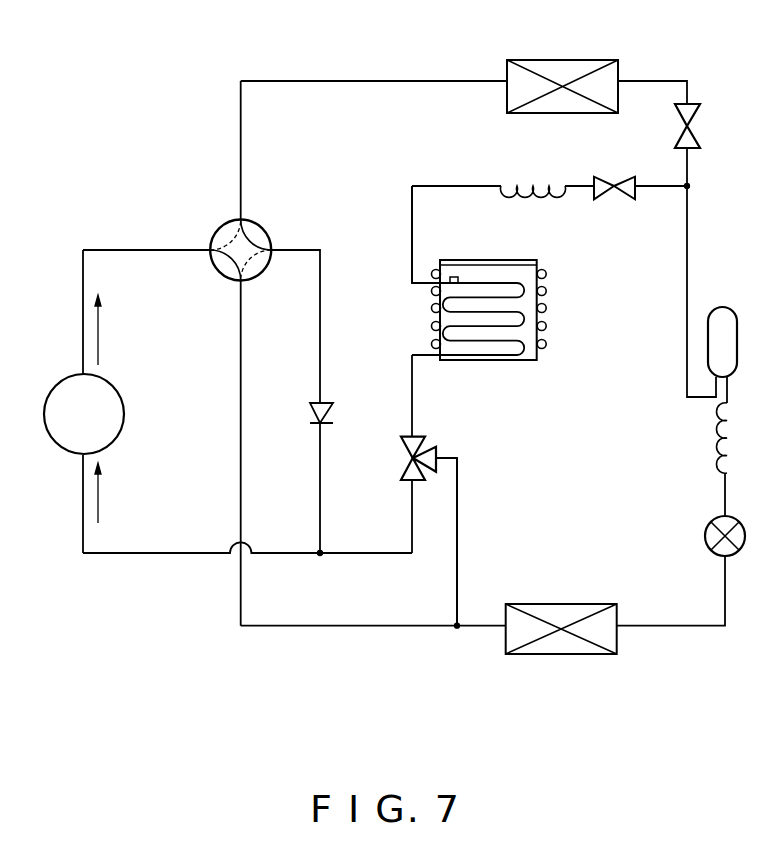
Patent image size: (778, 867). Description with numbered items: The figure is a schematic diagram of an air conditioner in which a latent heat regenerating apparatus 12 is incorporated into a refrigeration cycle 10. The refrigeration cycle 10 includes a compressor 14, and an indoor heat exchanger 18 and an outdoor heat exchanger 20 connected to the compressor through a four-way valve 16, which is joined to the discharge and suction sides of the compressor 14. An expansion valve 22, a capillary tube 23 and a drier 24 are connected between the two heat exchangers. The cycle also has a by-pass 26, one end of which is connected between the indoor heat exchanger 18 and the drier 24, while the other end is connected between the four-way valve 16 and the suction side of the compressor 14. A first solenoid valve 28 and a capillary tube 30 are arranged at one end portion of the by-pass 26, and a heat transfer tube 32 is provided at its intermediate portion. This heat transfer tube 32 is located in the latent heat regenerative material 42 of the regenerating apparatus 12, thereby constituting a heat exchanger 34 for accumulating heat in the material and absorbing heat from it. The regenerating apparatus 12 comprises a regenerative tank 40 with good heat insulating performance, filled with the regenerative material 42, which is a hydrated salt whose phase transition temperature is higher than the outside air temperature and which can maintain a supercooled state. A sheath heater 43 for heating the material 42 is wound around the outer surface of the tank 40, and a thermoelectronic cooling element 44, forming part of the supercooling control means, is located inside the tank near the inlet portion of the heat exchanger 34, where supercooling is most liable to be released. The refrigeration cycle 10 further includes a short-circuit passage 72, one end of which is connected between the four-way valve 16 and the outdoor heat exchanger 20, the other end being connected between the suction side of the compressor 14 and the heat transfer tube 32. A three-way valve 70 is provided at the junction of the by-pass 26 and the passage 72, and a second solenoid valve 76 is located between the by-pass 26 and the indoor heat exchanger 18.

The refrigeration cycle 10 is at (141, 82).
The latent heat regenerating apparatus 12 is at (503, 408).
The compressor 14 is at (124, 400).
The four-way valve 16 is at (219, 237).
The indoor heat exchanger 18 is at (561, 60).
The outdoor heat exchanger 20 is at (553, 604).
The expansion valve 22 is at (705, 537).
The capillary tube 23 is at (717, 455).
The drier 24 is at (722, 307).
The by-pass 26 is at (447, 186).
The first solenoid valve 28 is at (615, 199).
The capillary tube 30 is at (531, 177).
The heat transfer tube 32 is at (523, 360).
The heat exchanger 34 is at (482, 347).
The regenerative tank 40 is at (547, 318).
The latent heat regenerative material 42 is at (515, 317).
The sheath heater 43 is at (547, 275).
The thermoelectronic cooling element 44 is at (454, 277).
The three-way valve 70 is at (401, 468).
The short-circuit passage 72 is at (458, 519).
The second solenoid valve 76 is at (700, 126).